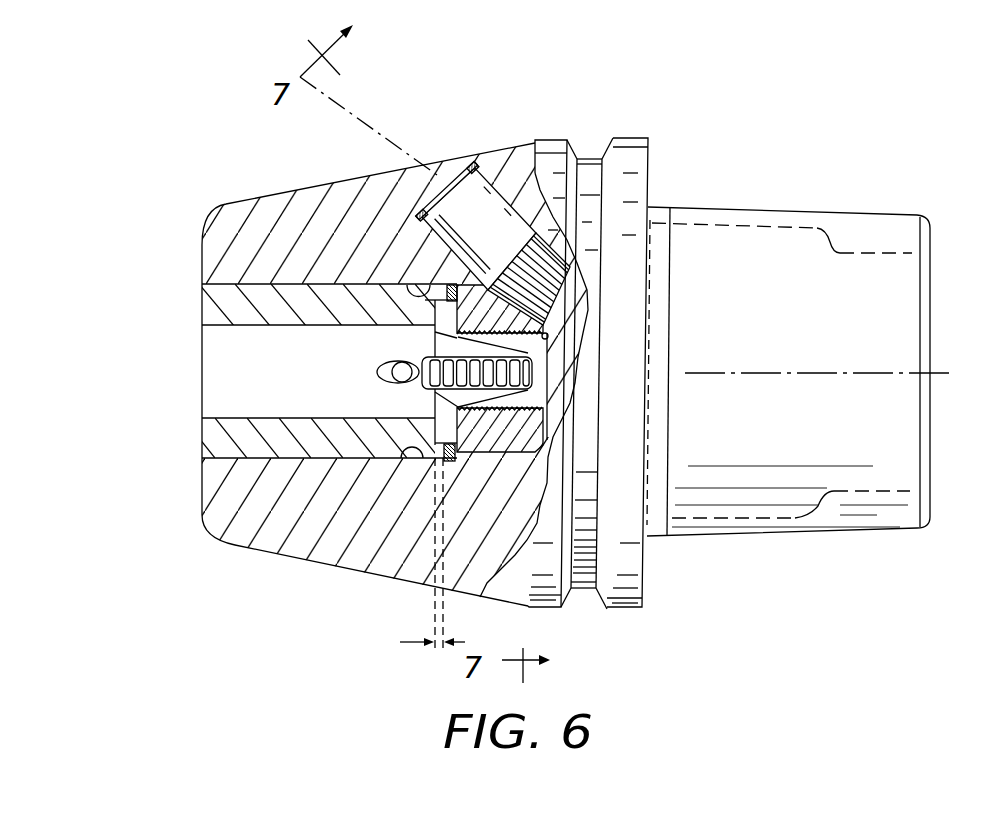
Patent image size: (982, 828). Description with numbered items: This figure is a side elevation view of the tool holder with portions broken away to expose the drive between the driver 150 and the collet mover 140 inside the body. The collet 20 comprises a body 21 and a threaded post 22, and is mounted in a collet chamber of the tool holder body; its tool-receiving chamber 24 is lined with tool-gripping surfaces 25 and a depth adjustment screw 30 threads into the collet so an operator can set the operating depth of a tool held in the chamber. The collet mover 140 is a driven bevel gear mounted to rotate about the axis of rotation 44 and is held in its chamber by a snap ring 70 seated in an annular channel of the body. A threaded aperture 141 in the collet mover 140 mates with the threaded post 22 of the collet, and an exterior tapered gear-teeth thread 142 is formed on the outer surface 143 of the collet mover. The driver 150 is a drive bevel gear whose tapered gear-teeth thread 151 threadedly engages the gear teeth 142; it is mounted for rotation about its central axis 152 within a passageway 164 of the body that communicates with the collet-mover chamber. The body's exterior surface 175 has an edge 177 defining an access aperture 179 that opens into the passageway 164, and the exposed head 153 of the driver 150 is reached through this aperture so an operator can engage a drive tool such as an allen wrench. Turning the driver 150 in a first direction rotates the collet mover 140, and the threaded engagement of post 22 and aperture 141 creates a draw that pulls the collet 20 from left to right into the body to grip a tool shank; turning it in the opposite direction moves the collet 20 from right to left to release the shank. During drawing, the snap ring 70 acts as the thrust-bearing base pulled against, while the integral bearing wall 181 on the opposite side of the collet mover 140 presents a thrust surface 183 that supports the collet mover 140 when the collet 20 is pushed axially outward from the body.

The collet 20 is at (285, 274).
The body 21 is at (315, 462).
The threaded post 22 is at (548, 418).
The tool-receiving chamber 24 is at (242, 379).
The tool-gripping surface 25 is at (290, 328).
The depth adjustment screw 30 is at (424, 389).
The axis of rotation 44 is at (797, 370).
The snap ring 70 is at (433, 465).
The collet mover 140 is at (458, 277).
The threaded aperture 141 is at (545, 396).
The exterior tapered gear-teeth thread 142 is at (462, 452).
The outer surface 143 is at (468, 462).
The driver 150 is at (506, 170).
The tapered gear-teeth thread 151 is at (548, 268).
The central axis 152 is at (418, 155).
The exposed head 153 is at (452, 152).
The passageway 164 is at (458, 274).
The exterior surface 175 is at (281, 193).
The edge 177 is at (468, 158).
The access aperture 179 is at (435, 146).
The integral bearing wall 181 is at (547, 354).
The thrust surface 183 is at (542, 412).